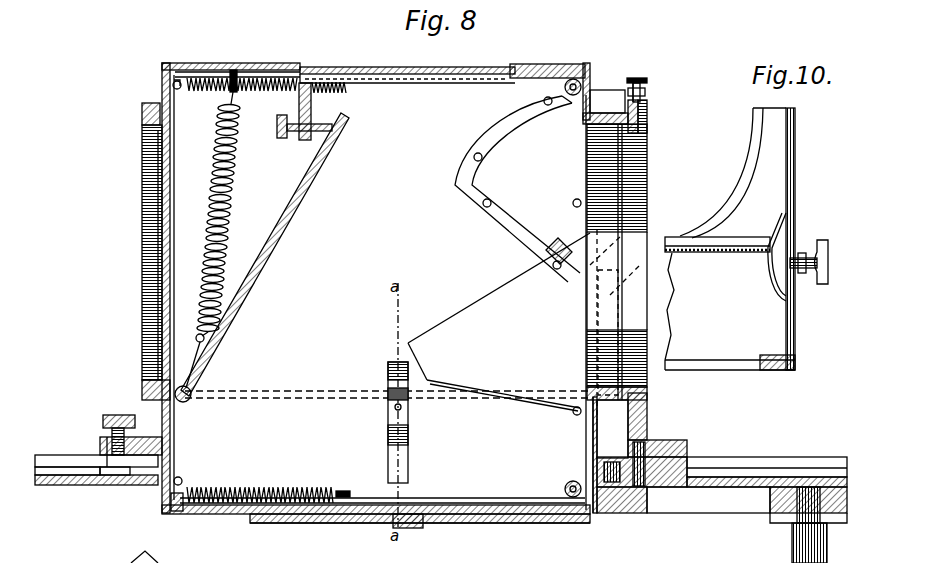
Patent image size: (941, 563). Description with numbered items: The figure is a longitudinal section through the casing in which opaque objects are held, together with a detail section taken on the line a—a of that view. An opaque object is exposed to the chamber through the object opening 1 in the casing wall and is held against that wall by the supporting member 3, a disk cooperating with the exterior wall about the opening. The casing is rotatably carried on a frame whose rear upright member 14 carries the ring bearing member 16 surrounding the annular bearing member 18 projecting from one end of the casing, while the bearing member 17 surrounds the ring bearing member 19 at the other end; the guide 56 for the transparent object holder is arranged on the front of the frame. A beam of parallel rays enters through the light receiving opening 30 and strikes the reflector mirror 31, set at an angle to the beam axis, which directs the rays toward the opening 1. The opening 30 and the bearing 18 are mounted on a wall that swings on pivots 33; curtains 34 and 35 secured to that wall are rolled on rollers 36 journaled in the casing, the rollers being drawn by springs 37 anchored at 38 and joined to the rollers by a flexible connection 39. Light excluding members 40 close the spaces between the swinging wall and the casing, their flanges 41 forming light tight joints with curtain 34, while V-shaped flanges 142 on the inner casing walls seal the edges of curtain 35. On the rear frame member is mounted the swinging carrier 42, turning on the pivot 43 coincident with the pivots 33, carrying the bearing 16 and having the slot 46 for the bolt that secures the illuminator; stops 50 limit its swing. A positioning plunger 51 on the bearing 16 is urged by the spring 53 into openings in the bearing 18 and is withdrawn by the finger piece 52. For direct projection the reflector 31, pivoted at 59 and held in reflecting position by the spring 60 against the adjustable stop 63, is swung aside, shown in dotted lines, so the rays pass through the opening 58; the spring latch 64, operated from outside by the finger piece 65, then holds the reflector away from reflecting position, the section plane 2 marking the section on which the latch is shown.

In FIG. 8, the object opening 1 is at (535, 510).
In FIG. 8, the section plane 2 is at (435, 299).
In FIG. 8, the supporting member 3 is at (490, 512).
In FIG. 8, the rear upright member 14 is at (808, 541).
In FIG. 8, the bearing member 16 is at (646, 113).
In FIG. 8, the bearing member 17 is at (145, 117).
In FIG. 8, the bearing member 18 is at (647, 127).
In FIG. 8, the bearing member 19 is at (145, 140).
In FIG. 8, the light receiving opening 30 is at (645, 172).
In FIG. 8, the reflector mirror 31 is at (242, 306).
In FIG. 10, the reflector mirror 31 is at (726, 255).
In FIG. 8, the pivots 33 is at (630, 237).
In FIG. 8, the curtain 34 is at (593, 441).
In FIG. 8, the curtain 35 is at (588, 92).
In FIG. 8, the rollers 36 is at (586, 82).
In FIG. 8, the springs 37 is at (262, 78).
In FIG. 8, the spring anchorage 38 is at (172, 83).
In FIG. 8, the flexible connection 39 is at (538, 70).
In FIG. 8, the light excluding members 40 is at (486, 306).
In FIG. 8, the flanges 41 is at (537, 402).
In FIG. 8, the swinging carrier 42 is at (722, 478).
In FIG. 8, the pivot 43 is at (603, 468).
In FIG. 8, the slot 46 is at (778, 470).
In FIG. 8, the stops 50 is at (152, 562).
In FIG. 8, the plunger 51 is at (642, 102).
In FIG. 8, the finger piece 52 is at (646, 83).
In FIG. 8, the spring 53 is at (646, 93).
In FIG. 8, the guide 56 is at (68, 481).
In FIG. 8, the opening 58 is at (152, 335).
In FIG. 10, the opening 58 is at (718, 203).
In FIG. 8, the reflector pivot 59 is at (188, 385).
In FIG. 10, the reflector pivot 59 is at (738, 240).
In FIG. 8, the spring 60 is at (218, 242).
In FIG. 8, the adjustable stop 63 is at (280, 132).
In FIG. 8, the spring latch 64 is at (405, 432).
In FIG. 10, the spring latch 64 is at (777, 281).
In FIG. 10, the finger piece 65 is at (824, 283).
In FIG. 8, the V-shaped flanges 142 is at (515, 138).